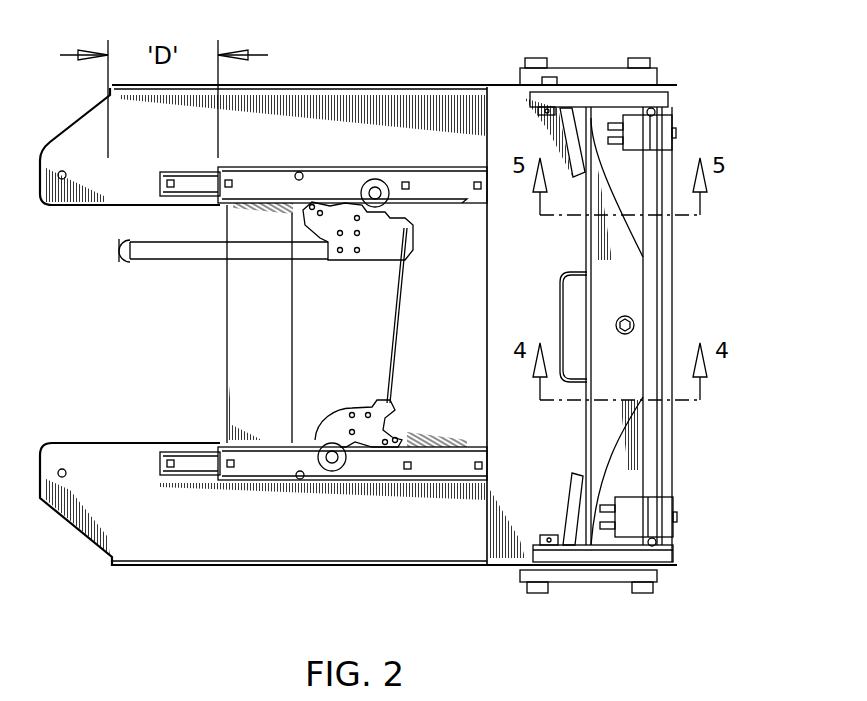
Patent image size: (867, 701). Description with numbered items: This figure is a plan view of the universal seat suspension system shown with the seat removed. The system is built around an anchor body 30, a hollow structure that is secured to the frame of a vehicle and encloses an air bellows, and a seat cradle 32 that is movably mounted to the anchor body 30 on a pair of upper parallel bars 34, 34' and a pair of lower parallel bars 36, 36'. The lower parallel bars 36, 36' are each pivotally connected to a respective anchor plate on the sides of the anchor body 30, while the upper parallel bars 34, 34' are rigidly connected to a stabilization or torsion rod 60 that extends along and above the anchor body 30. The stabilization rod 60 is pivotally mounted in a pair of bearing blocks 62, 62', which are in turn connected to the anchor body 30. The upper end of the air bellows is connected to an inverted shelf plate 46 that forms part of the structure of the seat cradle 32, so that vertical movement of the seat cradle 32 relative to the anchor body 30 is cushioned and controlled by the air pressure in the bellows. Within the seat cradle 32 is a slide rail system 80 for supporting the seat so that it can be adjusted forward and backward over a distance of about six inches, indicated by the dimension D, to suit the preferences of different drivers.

The anchor body 30 is at (668, 480).
The seat cradle 32 is at (381, 85).
The upper parallel bar 34 is at (614, 97).
The upper parallel bar 34' is at (607, 566).
The lower parallel bar 36 is at (567, 55).
The lower parallel bar 36' is at (586, 610).
The inverted shelf plate 46 is at (612, 350).
The stabilization rod 60 is at (652, 277).
The bearing block 62 is at (685, 129).
The bearing block 62' is at (661, 555).
The slide rail system 80 is at (226, 207).